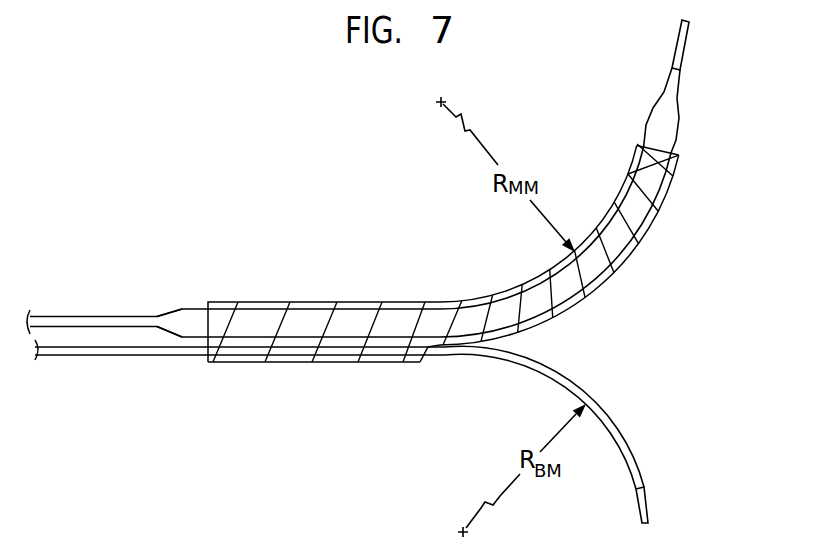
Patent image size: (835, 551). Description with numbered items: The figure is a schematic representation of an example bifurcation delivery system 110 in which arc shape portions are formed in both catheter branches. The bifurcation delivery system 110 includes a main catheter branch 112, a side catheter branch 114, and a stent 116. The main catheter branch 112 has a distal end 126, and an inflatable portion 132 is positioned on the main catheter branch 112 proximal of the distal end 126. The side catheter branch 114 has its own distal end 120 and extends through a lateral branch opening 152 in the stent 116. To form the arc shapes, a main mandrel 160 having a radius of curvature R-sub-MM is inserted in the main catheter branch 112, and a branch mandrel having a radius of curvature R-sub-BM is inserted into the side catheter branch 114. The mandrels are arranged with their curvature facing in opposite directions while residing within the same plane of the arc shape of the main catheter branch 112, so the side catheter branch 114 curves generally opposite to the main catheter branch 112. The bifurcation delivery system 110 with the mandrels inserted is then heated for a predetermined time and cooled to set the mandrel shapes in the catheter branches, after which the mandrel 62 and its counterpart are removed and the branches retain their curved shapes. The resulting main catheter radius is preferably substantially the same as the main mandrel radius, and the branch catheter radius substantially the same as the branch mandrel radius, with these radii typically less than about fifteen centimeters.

The bifurcation delivery system 110 is at (250, 376).
The main catheter branch 112 is at (119, 304).
The side catheter branch 114 is at (126, 371).
The stent 116 is at (681, 195).
The distal end 120 is at (628, 441).
The distal end 126 is at (680, 77).
The inflatable portion 132 is at (193, 314).
The lateral branch opening 152 is at (425, 364).
The main mandrel 160 is at (688, 40).
The mandrel 62 is at (647, 497).